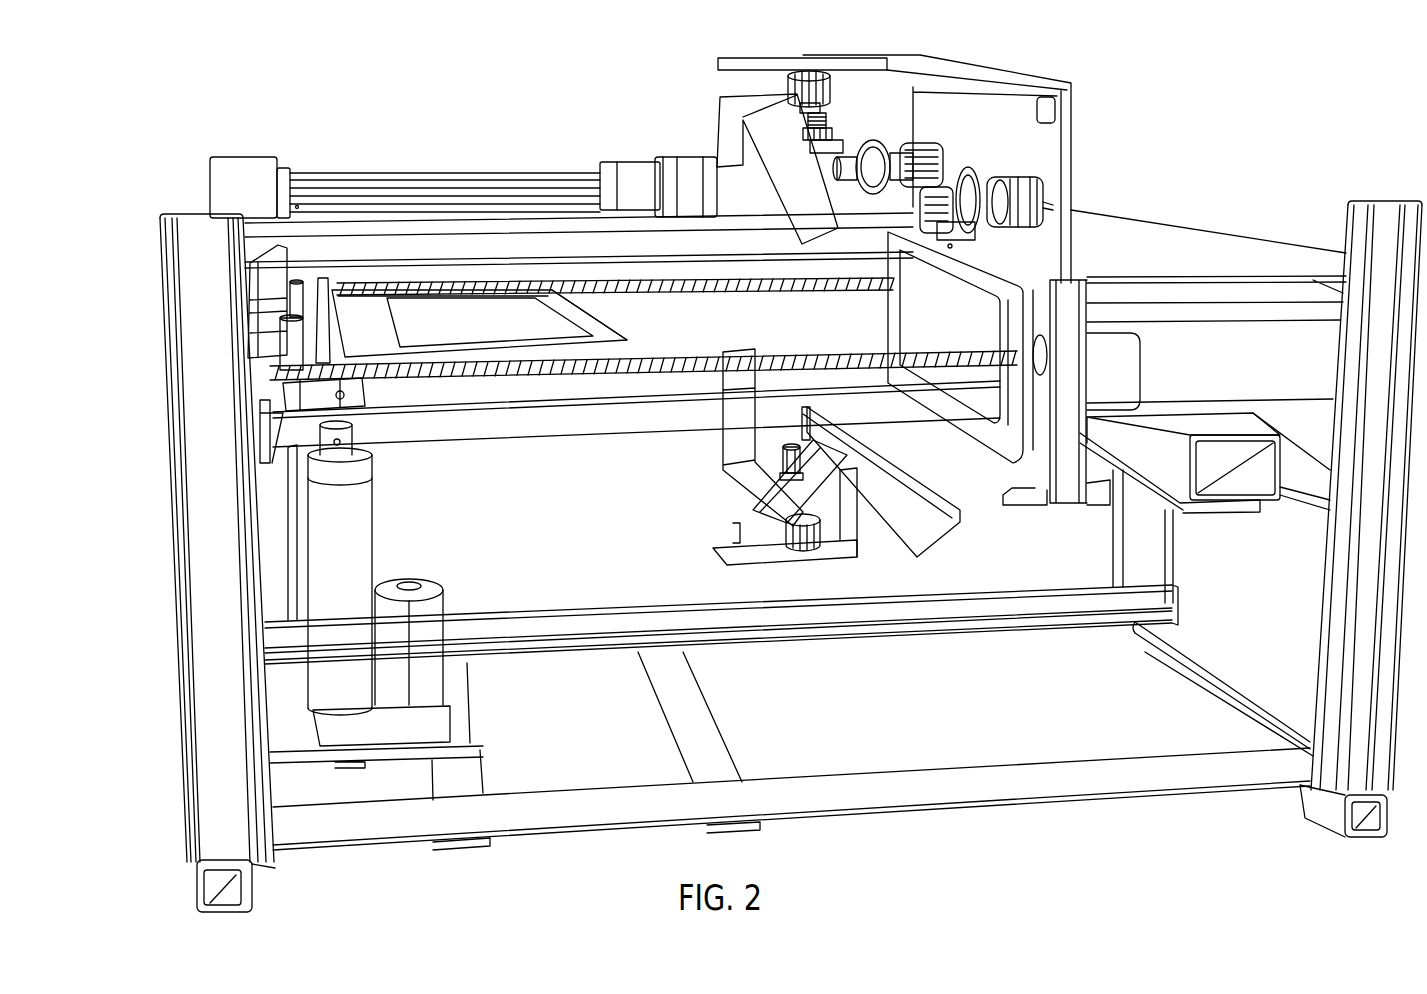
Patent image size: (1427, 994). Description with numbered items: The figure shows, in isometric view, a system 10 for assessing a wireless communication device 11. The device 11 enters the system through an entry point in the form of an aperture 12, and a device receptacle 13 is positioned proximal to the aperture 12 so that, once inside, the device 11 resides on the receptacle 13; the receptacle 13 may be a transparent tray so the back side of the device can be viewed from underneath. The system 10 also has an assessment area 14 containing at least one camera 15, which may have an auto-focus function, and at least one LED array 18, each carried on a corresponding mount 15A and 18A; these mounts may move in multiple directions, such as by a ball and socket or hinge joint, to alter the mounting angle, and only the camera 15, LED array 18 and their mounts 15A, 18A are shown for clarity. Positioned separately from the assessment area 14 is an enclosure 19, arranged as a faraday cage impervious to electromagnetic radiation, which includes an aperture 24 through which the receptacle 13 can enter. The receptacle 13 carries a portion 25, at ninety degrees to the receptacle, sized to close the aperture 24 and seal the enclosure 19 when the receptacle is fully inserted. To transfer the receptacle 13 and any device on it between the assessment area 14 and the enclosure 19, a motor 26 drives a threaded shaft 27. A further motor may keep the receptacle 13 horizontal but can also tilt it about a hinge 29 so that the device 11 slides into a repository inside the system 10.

The system 10 is at (172, 50).
The wireless communication device 11 is at (455, 322).
The aperture 12 is at (305, 168).
The device receptacle 13 is at (605, 338).
The assessment area 14 is at (660, 577).
The camera 15 is at (913, 208).
The camera mount 15A is at (830, 525).
The LED array 18 is at (795, 165).
The LED array mount 18A is at (742, 78).
The enclosure 19 is at (1222, 372).
The aperture of the enclosure 24 is at (980, 407).
The portion of the receptacle 25 is at (263, 360).
The motor 26 is at (253, 430).
The threaded shaft 27 is at (456, 393).
The hinge 29 is at (336, 405).